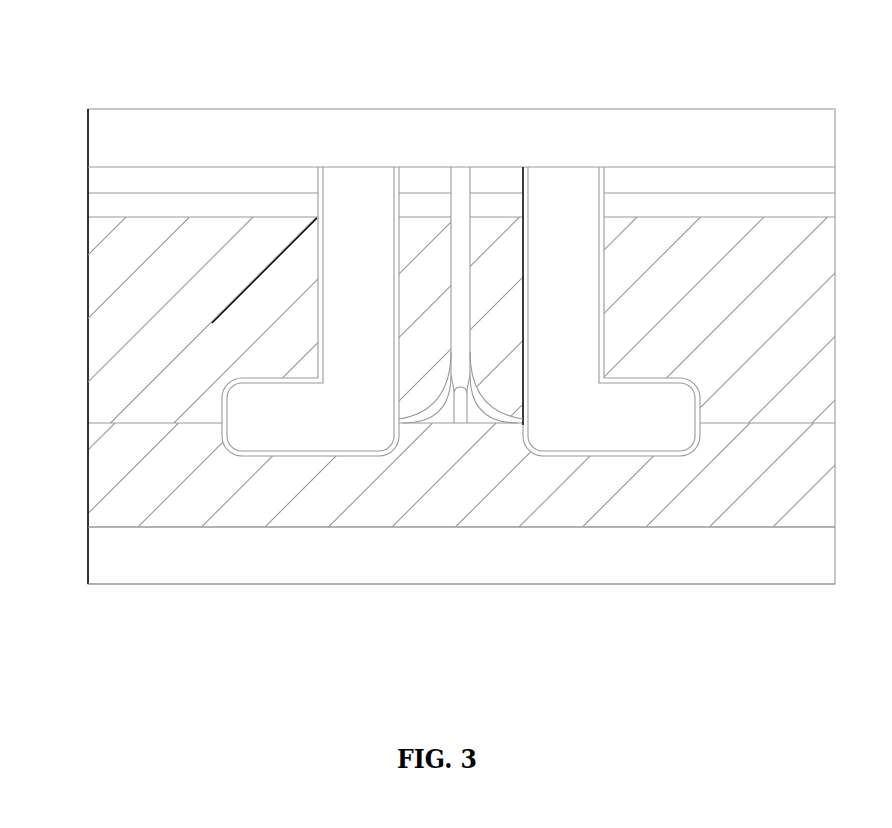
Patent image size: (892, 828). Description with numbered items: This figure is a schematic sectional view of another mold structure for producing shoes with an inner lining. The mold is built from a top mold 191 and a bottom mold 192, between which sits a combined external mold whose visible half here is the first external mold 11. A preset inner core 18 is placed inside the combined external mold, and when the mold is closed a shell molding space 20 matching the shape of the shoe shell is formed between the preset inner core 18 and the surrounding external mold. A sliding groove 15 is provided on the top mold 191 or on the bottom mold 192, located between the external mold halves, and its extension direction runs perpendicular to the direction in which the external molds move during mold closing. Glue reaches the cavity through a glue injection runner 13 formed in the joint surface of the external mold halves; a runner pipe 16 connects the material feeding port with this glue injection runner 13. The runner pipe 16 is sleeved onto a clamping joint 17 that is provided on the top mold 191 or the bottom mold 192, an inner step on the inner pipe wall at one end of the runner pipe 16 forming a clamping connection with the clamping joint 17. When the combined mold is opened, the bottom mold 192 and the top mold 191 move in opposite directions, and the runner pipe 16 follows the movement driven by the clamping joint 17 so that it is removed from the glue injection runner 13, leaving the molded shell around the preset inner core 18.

The top mold 191 is at (135, 153).
The first external mold 11 is at (253, 272).
The runner pipe 16 is at (459, 200).
The sliding groove 15 is at (722, 205).
The shell molding space 20 is at (225, 445).
The bottom mold 192 is at (210, 564).
The preset inner core 18 is at (338, 402).
The glue injection runner 13 is at (426, 405).
The clamping joint 17 is at (467, 417).